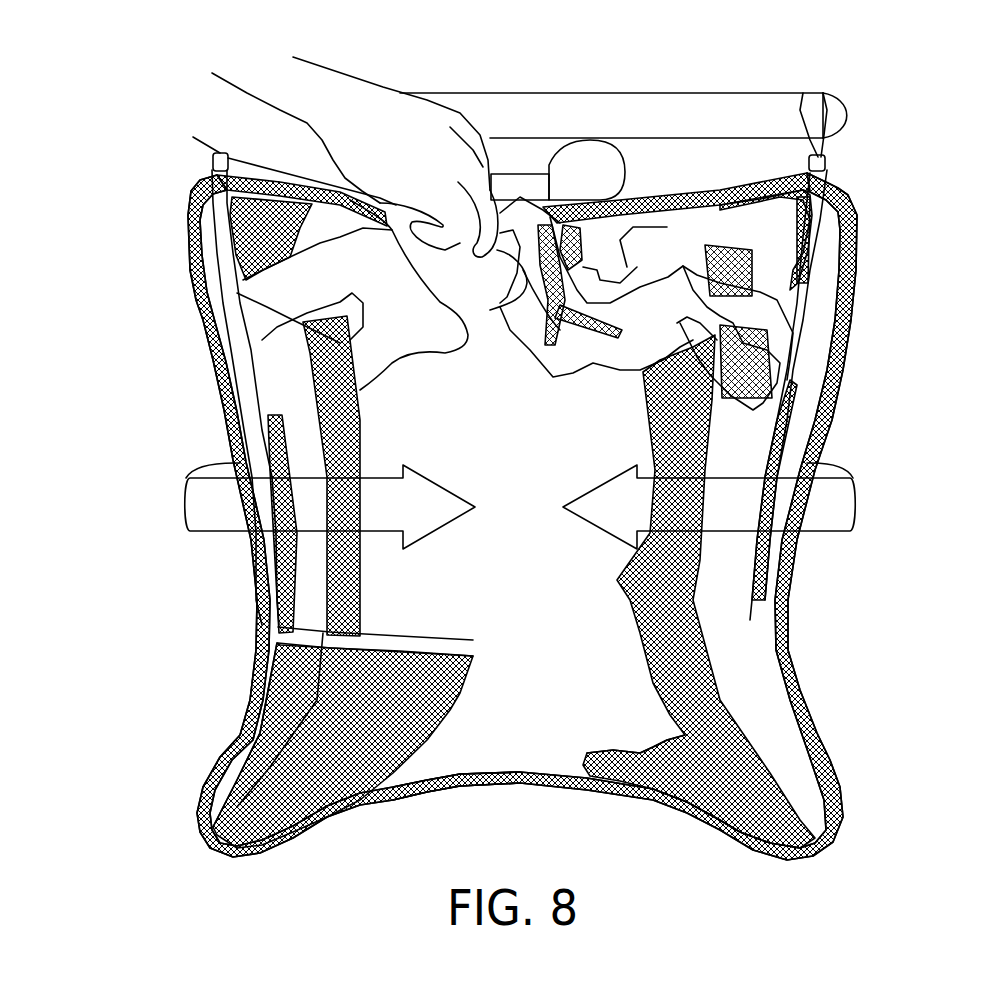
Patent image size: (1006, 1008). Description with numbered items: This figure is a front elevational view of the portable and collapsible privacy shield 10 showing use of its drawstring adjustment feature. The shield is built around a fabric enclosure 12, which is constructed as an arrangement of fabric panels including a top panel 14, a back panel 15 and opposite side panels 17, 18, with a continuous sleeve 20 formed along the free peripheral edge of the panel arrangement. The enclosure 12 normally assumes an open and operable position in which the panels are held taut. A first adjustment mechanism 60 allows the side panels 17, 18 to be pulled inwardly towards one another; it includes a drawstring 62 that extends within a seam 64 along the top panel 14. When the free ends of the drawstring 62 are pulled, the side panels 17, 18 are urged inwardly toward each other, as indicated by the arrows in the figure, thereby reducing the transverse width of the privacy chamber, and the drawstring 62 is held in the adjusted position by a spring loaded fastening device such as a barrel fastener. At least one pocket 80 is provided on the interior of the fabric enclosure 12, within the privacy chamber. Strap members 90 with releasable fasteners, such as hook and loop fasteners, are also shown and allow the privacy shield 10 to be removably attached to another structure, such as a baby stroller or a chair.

The portable and collapsible privacy shield 10 is at (595, 449).
The fabric enclosure 12 is at (436, 821).
The top panel 14 is at (623, 117).
The back panel 15 is at (619, 782).
The side panel 17 is at (715, 522).
The side panel 18 is at (235, 524).
The continuous sleeve 20 is at (514, 509).
The first adjustment mechanism 60 is at (386, 244).
The drawstring 62 is at (600, 303).
The seam 64 is at (318, 416).
The pocket 80 is at (348, 701).
The strap members 90 is at (481, 315).